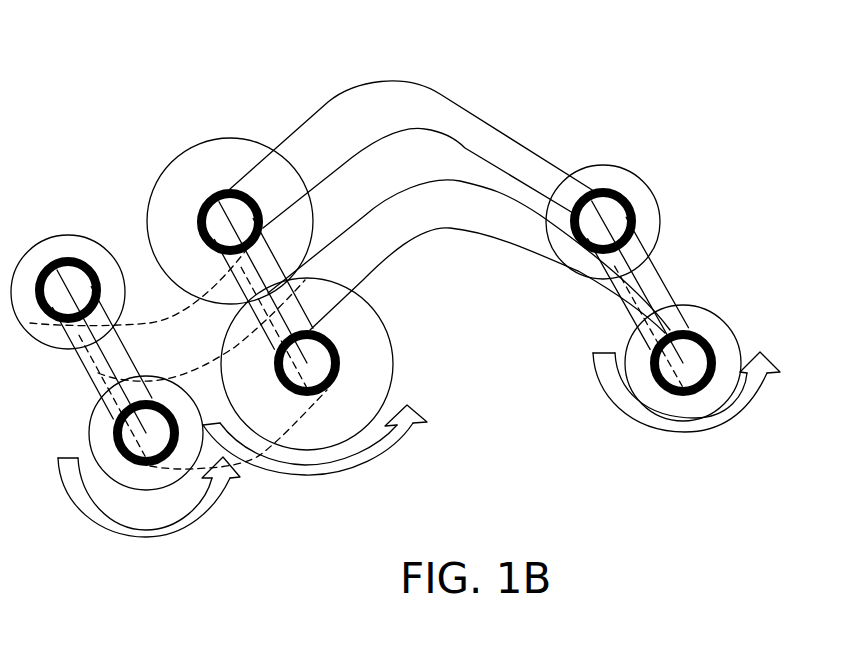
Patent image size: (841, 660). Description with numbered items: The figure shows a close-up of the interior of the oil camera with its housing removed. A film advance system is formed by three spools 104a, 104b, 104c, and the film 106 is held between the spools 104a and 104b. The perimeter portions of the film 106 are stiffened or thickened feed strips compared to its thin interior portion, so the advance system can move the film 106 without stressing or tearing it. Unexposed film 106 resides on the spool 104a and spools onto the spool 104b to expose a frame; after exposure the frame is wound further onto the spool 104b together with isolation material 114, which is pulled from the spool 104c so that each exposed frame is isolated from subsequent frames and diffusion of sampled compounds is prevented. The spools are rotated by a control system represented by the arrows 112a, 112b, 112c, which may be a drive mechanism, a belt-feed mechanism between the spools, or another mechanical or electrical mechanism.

The film 106 is at (393, 83).
The spool 104a is at (697, 305).
The spool 104b is at (214, 137).
The spool 104c is at (68, 235).
The control system arrow 112a is at (755, 388).
The control system arrow 112b is at (407, 436).
The control system arrow 112c is at (219, 498).
The isolation material 114 is at (262, 445).